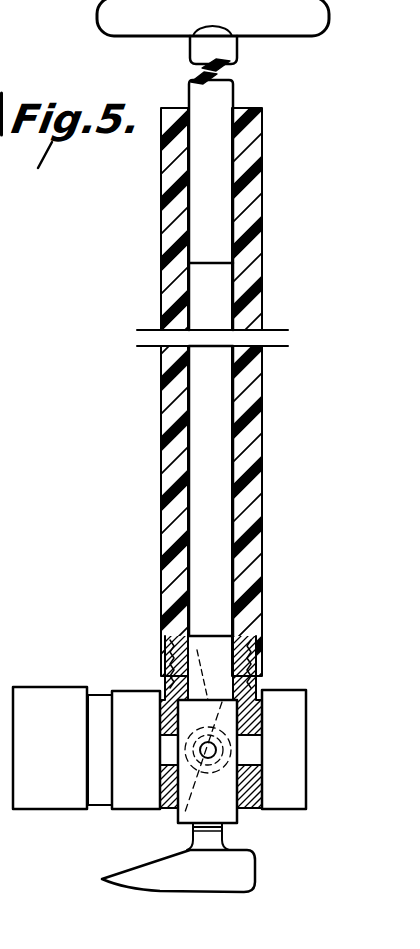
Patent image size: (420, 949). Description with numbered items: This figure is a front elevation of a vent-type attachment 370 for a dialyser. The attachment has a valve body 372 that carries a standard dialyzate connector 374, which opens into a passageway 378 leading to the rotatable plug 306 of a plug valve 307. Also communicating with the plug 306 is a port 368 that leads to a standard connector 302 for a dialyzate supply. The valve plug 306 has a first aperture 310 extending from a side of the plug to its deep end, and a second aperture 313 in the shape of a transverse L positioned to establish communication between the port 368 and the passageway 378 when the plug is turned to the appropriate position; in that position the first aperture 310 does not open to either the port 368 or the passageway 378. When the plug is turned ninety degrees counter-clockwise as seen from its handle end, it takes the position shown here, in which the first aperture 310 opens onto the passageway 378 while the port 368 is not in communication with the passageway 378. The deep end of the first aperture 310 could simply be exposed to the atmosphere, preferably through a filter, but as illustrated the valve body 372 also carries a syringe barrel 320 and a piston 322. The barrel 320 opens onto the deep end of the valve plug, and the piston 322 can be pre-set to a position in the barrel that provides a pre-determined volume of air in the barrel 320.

The standard connector 302 is at (250, 692).
The rotatable plug 306 is at (237, 815).
The plug valve 307 is at (108, 876).
The first aperture 310 is at (214, 451).
The second aperture 313 is at (230, 748).
The syringe barrel 320 is at (243, 576).
The piston 322 is at (222, 96).
The port 368 is at (177, 810).
The attachment 370 is at (154, 624).
The valve body 372 is at (116, 811).
The standard dialyzate connector 374 is at (100, 705).
The passageway 378 is at (165, 745).